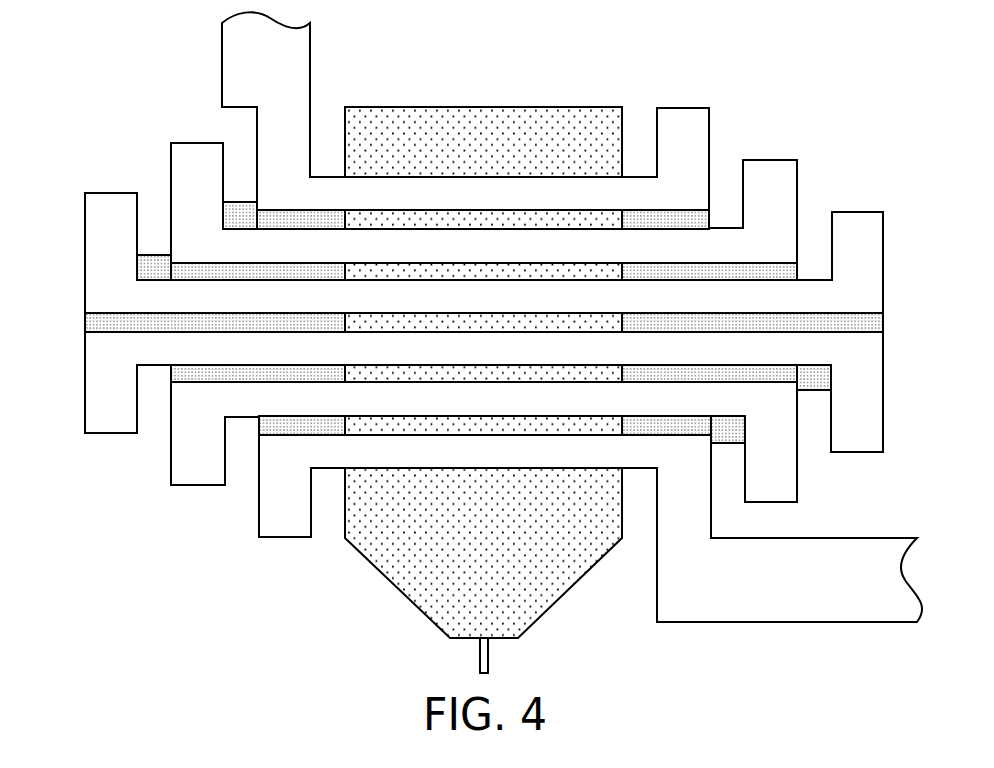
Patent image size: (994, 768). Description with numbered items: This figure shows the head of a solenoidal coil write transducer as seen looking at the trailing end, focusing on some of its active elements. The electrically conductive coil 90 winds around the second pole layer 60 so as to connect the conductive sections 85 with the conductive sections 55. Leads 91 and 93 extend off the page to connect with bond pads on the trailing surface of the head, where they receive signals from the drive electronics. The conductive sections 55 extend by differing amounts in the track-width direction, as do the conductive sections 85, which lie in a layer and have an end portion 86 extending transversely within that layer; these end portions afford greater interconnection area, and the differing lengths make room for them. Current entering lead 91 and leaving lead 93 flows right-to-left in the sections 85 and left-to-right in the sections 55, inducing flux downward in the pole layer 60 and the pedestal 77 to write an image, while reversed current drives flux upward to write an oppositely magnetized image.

The conductive sections 55 is at (155, 250).
The second pole layer 60 is at (378, 570).
The pedestal 77 is at (480, 655).
The conductive sections 85 is at (725, 228).
The end portion 86 is at (857, 212).
The electrically conductive coil 90 is at (900, 175).
The lead 91 is at (850, 537).
The lead 93 is at (310, 59).